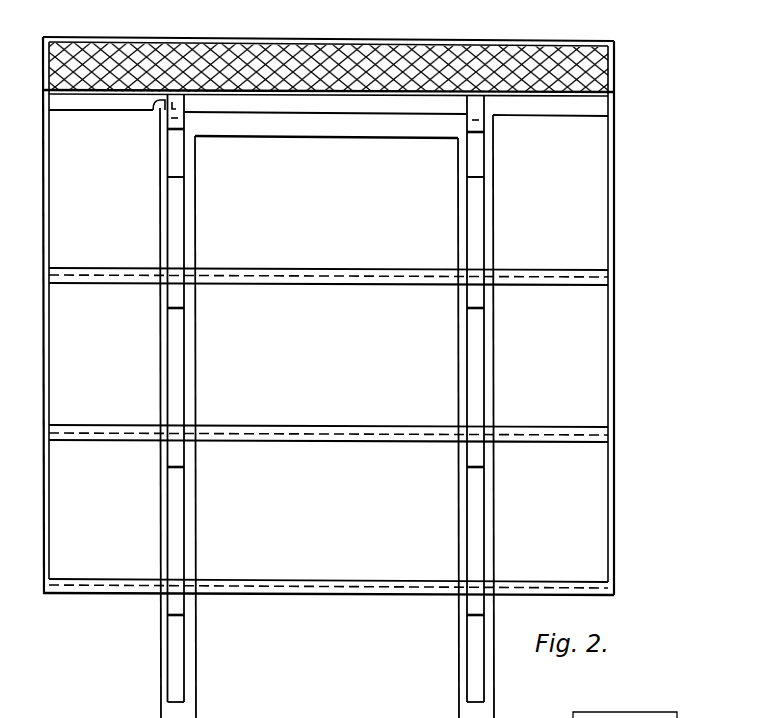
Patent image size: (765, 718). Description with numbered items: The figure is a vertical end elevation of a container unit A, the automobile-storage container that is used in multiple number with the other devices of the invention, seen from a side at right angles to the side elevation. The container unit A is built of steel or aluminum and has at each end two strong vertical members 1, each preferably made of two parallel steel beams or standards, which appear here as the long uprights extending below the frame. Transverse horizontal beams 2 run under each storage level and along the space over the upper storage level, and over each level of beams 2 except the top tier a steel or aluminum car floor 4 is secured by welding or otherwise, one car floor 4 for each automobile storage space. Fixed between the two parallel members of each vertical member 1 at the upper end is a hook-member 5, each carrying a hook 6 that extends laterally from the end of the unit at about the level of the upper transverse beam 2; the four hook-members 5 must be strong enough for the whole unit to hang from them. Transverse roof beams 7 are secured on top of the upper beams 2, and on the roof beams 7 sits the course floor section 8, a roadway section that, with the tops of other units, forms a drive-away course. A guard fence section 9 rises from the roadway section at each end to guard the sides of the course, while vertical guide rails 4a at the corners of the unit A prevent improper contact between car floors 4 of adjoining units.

The vertical member 1 is at (161, 380).
The transverse horizontal beam 2 is at (161, 134).
The car floor 4 is at (380, 268).
The guide rail 4a is at (50, 350).
The hook-member 5 is at (477, 148).
The hook 6 is at (150, 112).
The roof beam 7 is at (73, 118).
The course floor section 8 is at (312, 96).
The guard fence section 9 is at (43, 73).
The container unit A is at (615, 365).